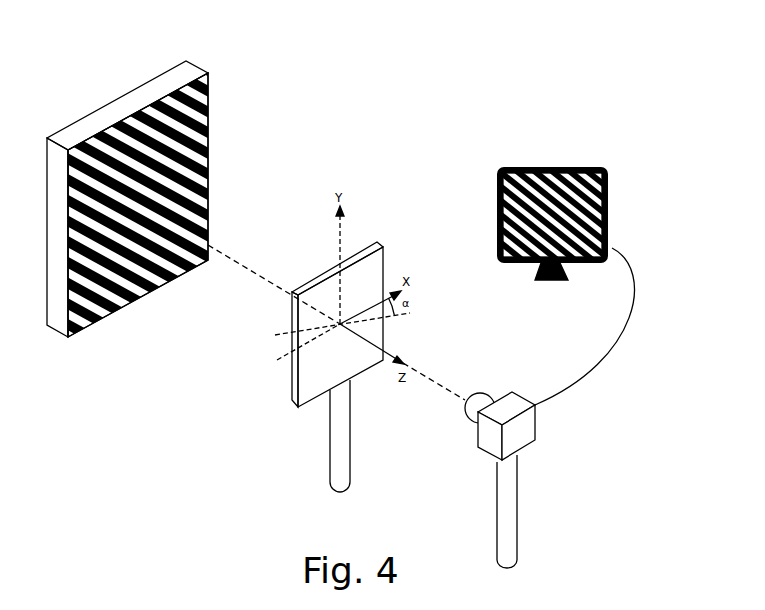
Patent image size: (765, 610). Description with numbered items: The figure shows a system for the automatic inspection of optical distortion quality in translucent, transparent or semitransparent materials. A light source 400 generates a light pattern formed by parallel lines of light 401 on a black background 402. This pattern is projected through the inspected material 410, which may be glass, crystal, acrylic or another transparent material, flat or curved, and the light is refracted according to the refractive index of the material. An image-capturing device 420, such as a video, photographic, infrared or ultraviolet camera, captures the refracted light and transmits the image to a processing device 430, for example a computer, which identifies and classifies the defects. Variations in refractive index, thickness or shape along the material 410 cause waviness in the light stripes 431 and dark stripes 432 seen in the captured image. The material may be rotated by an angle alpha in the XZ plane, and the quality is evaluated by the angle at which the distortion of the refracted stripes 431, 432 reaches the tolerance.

The light source 400 is at (195, 63).
The parallel lines of light 401 is at (157, 213).
The black background 402 is at (161, 205).
The inspected material 410 is at (297, 388).
The image-capturing device 420 is at (485, 450).
The processing device 430 is at (498, 257).
The light stripes 431 is at (609, 190).
The dark stripes 432 is at (609, 213).